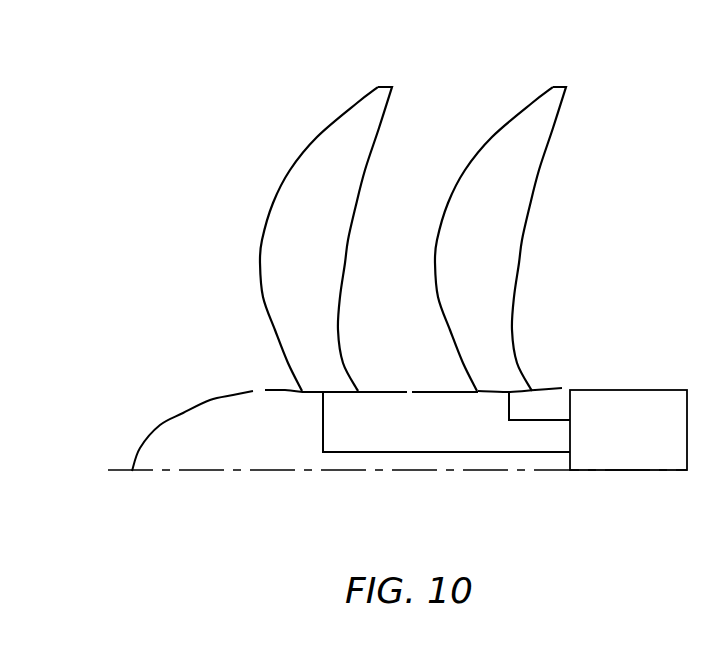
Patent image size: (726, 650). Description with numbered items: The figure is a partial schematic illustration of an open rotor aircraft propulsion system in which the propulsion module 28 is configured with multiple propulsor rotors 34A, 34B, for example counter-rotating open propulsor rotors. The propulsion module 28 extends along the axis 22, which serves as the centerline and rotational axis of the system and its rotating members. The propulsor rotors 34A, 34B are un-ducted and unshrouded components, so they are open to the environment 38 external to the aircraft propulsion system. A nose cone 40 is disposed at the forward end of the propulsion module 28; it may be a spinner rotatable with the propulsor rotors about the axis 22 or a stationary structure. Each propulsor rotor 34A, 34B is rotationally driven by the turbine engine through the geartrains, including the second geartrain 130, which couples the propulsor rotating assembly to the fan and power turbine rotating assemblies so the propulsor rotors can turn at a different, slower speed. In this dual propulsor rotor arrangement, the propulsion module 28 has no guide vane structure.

The propulsion module 28 is at (386, 215).
The environment 38 is at (175, 147).
The propulsor rotor 34A is at (243, 246).
The propulsor rotor 34B is at (533, 244).
The nose cone 40 is at (183, 412).
The axis 22 is at (132, 470).
The second geartrain 130 is at (494, 429).